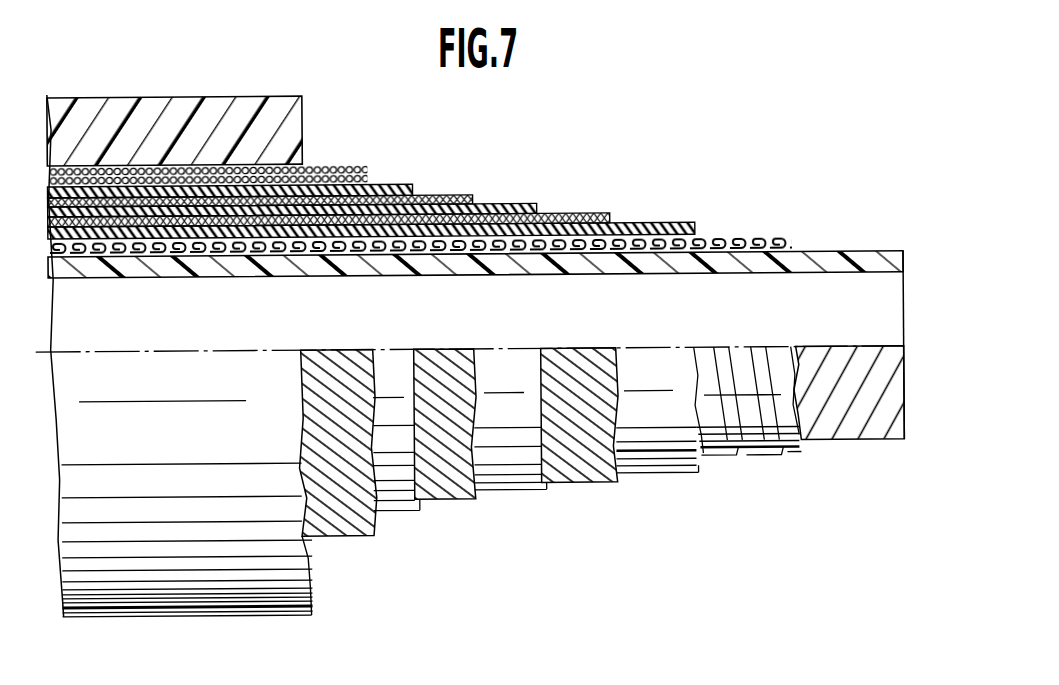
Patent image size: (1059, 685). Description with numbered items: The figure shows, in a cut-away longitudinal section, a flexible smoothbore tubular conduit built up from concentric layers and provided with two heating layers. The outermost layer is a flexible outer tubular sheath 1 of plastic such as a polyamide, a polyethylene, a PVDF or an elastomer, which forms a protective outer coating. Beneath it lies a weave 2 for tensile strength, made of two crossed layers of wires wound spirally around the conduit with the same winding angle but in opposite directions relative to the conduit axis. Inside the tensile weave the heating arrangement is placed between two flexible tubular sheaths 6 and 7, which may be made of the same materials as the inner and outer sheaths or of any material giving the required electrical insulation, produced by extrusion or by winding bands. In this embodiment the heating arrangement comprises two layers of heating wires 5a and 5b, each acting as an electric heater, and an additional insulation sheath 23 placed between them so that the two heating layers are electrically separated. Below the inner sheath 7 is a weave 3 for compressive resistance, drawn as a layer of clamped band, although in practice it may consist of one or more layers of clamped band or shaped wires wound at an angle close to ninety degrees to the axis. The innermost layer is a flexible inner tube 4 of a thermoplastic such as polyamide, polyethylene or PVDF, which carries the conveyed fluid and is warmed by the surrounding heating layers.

The flexible outer tubular sheath 1 is at (282, 127).
The weave for tensile strength 2 is at (362, 170).
The flexible tubular sheath 6 is at (410, 191).
The layer of heating wires 5a is at (472, 200).
The additional insulation sheath 23 is at (528, 211).
The layer of heating wires 5b is at (607, 224).
The flexible tubular sheath 7 is at (680, 232).
The weave for compressive resistance 3 is at (760, 245).
The flexible inner tube 4 is at (872, 269).